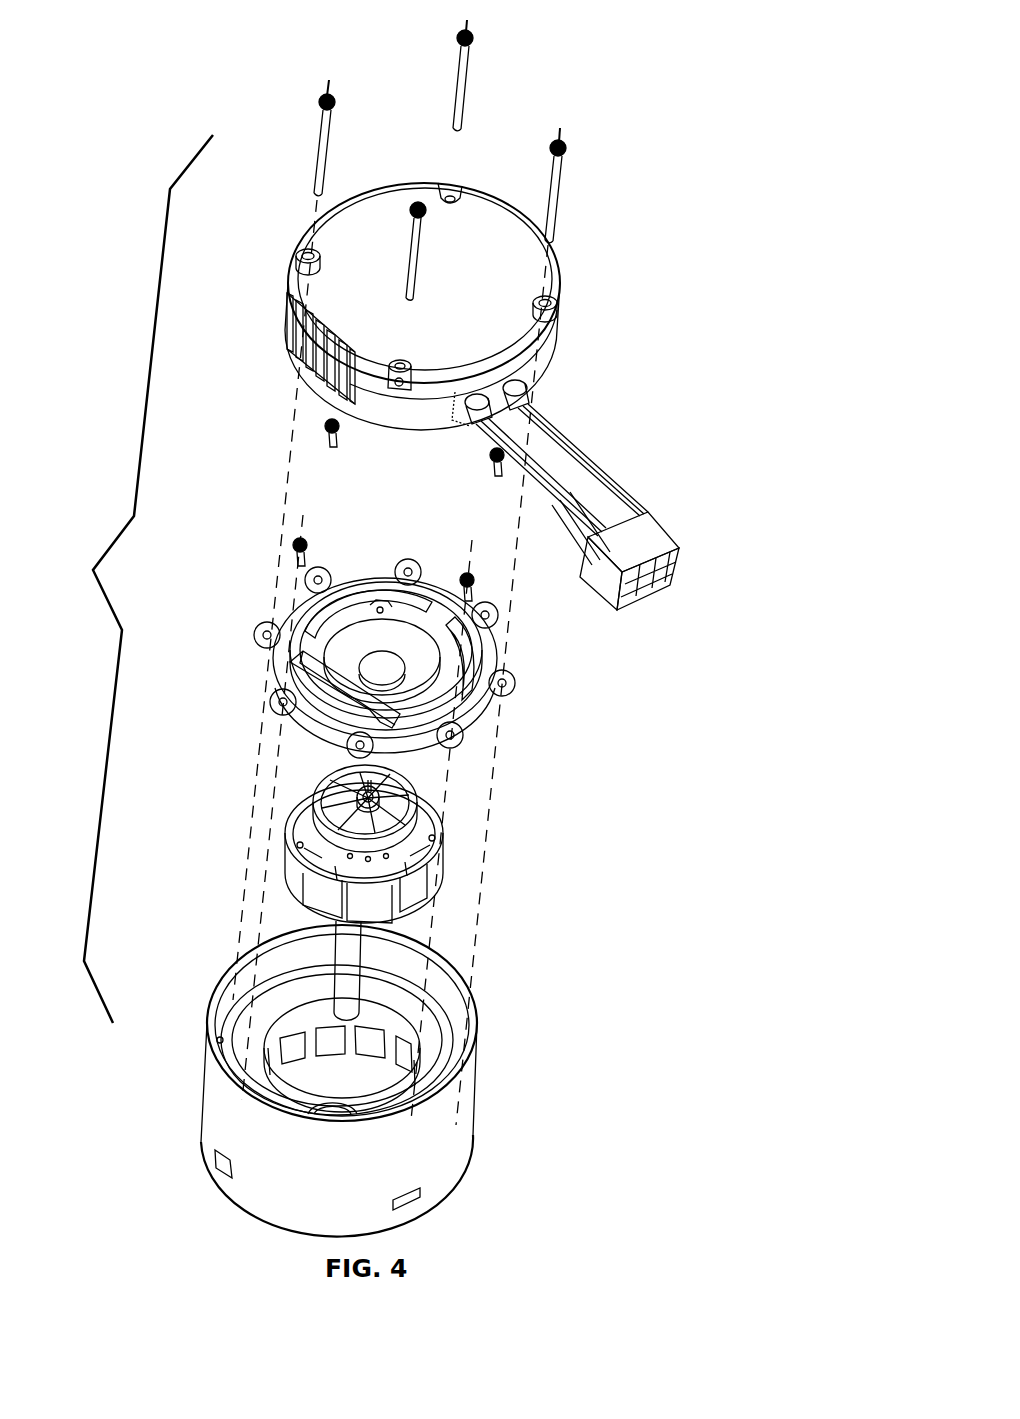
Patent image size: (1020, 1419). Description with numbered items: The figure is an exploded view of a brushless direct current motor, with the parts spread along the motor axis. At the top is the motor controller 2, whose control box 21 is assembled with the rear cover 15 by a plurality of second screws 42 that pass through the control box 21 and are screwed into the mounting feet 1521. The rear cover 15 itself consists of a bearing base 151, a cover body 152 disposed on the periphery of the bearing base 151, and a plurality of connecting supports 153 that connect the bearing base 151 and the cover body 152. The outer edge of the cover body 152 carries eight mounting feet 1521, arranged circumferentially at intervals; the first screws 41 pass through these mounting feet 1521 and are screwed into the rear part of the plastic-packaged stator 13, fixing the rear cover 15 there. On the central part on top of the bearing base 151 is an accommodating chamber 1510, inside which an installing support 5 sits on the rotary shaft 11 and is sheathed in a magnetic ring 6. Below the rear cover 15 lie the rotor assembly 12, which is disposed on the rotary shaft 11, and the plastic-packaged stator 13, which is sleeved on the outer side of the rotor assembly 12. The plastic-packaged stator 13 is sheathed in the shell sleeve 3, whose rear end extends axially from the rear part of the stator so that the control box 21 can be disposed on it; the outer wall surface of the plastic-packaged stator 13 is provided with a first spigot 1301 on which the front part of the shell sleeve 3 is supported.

The motor controller 2 is at (451, 396).
The control box 21 is at (345, 280).
The second screws 42 is at (313, 160).
The first screws 41 is at (297, 552).
The rear cover 15 is at (373, 676).
The accommodating chamber 1510 is at (343, 658).
The bearing base 151 is at (447, 660).
The mounting feet 1521 is at (280, 702).
The cover body 152 is at (355, 658).
The connecting supports 153 is at (438, 732).
The installing support 5 is at (320, 800).
The magnetic ring 6 is at (322, 830).
The rotor assembly 12 is at (376, 844).
The rotary shaft 11 is at (352, 962).
The plastic-packaged stator 13 is at (435, 1057).
The shell sleeve 3 is at (370, 1089).
The first spigot 1301 is at (408, 1207).